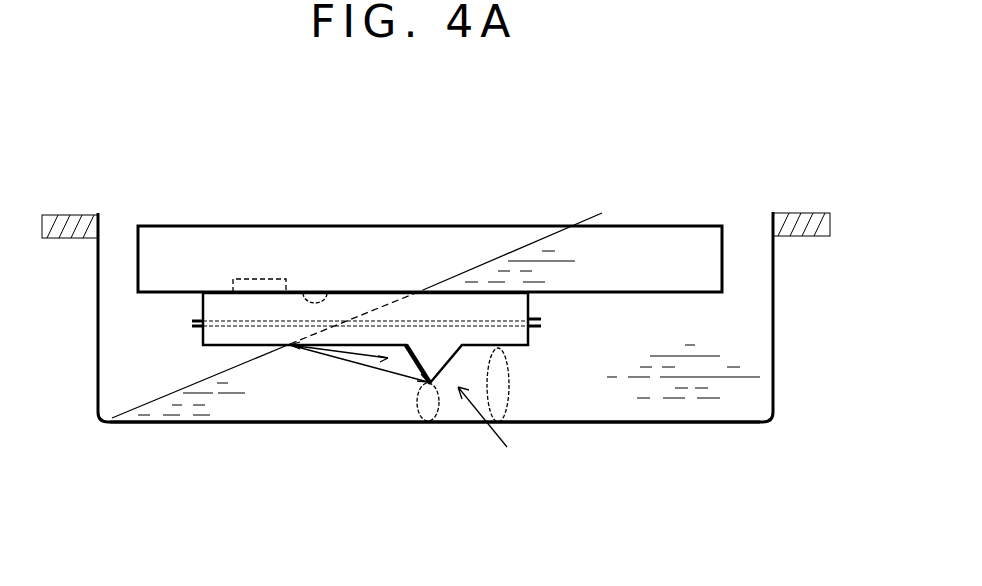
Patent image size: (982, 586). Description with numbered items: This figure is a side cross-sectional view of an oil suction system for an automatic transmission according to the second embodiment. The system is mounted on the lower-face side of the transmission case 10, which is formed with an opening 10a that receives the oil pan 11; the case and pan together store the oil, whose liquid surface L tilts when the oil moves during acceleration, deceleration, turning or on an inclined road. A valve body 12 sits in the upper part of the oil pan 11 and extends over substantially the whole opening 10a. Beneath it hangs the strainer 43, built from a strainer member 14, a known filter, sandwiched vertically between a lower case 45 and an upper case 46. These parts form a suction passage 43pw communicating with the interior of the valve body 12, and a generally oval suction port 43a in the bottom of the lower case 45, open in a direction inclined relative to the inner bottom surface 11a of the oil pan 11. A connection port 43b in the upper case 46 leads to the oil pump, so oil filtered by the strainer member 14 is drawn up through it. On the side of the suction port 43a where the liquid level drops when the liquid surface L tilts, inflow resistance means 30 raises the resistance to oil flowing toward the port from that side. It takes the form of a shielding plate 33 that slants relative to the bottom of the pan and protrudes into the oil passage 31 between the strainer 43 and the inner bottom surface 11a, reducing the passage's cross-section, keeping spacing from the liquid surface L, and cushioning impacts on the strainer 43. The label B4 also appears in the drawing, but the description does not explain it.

The transmission case 10 is at (68, 215).
The opening 10a is at (773, 228).
The oil pan 11 is at (773, 365).
The inner bottom surface 11a is at (250, 423).
The valve body 12 is at (412, 227).
The strainer member 14 is at (392, 320).
The inflow resistance means 30 is at (348, 362).
The oil passage 31 is at (490, 404).
The shielding plate 33 is at (418, 366).
The strainer 43 is at (533, 303).
The suction port 43a is at (458, 352).
The connection port 43b is at (253, 279).
The suction passage 43pw is at (328, 291).
The lower case 45 is at (203, 339).
The upper case 46 is at (203, 300).
The liquid surface L is at (146, 402).
The bubble flow B4 is at (493, 432).